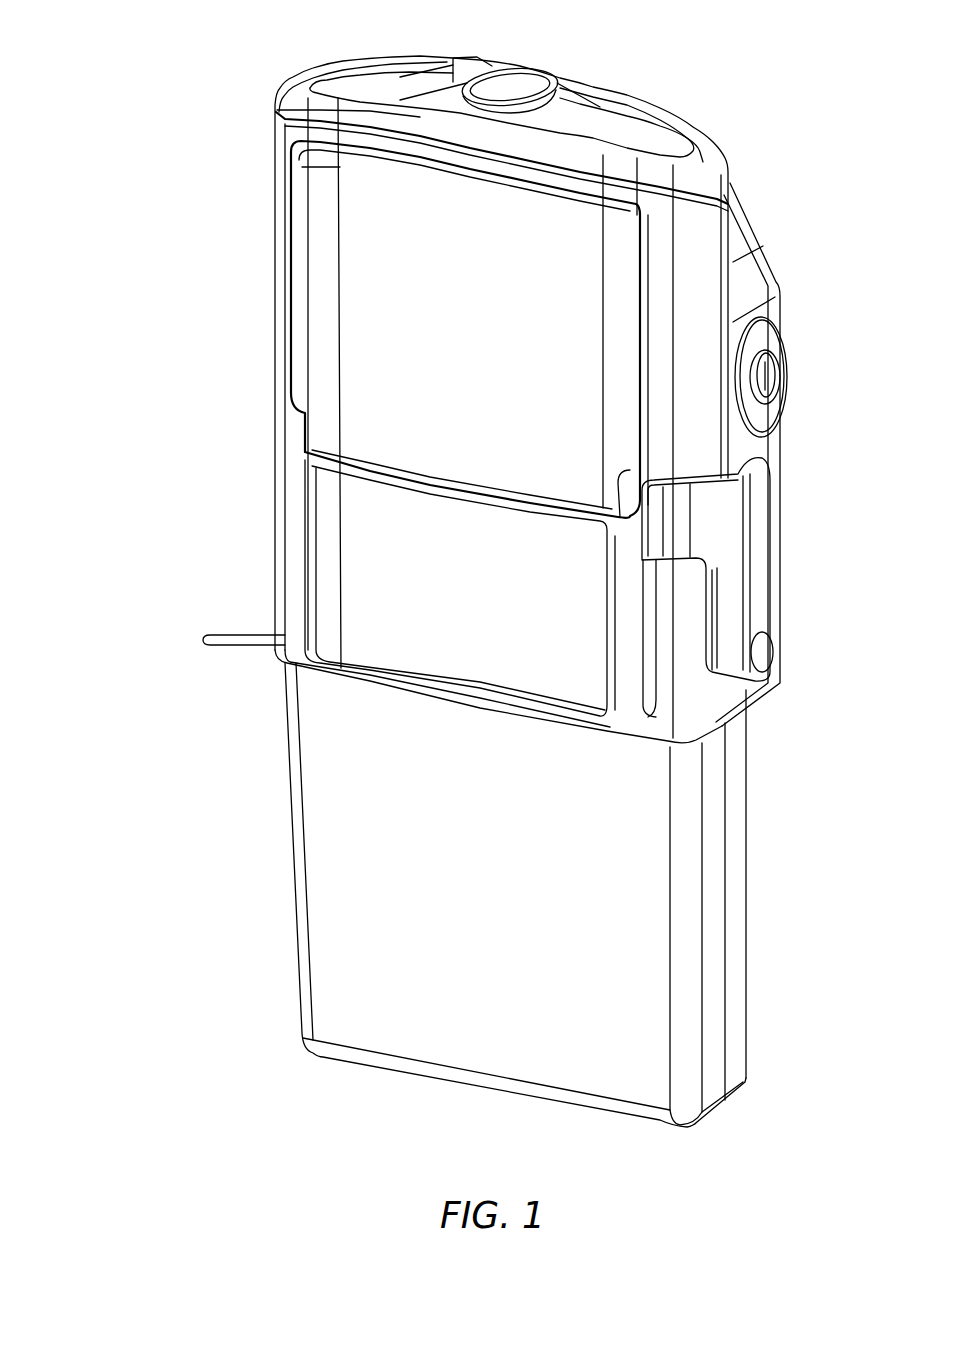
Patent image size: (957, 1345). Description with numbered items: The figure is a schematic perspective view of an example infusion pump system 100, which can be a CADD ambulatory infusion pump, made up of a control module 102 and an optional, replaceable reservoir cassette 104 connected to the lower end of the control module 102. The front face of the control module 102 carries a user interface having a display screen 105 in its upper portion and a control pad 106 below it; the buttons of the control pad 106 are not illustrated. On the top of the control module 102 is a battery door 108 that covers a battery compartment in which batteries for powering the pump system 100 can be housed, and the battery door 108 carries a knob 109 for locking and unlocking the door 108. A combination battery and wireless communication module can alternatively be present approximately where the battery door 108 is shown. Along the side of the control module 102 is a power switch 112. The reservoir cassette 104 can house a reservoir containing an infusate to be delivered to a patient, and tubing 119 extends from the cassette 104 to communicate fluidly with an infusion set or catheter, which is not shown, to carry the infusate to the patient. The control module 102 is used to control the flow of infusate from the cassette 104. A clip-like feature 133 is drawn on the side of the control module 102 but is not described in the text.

The infusion pump system 100 is at (137, 452).
The control module 102 is at (762, 284).
The reservoir cassette 104 is at (733, 955).
The display screen 105 is at (363, 308).
The control pad 106 is at (378, 595).
The battery door 108 is at (640, 138).
The knob 109 is at (513, 87).
The power switch 112 is at (777, 377).
The tubing 119 is at (223, 647).
The clip 133 is at (702, 526).